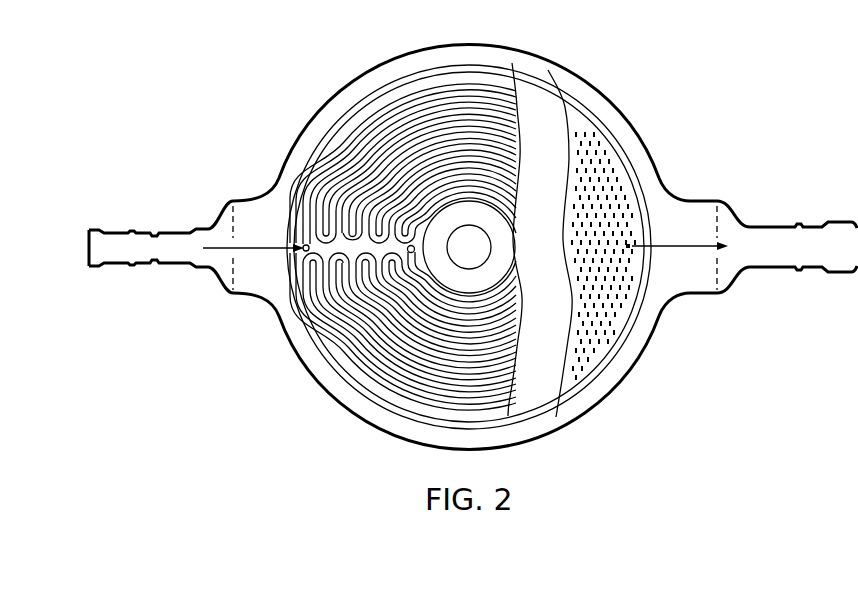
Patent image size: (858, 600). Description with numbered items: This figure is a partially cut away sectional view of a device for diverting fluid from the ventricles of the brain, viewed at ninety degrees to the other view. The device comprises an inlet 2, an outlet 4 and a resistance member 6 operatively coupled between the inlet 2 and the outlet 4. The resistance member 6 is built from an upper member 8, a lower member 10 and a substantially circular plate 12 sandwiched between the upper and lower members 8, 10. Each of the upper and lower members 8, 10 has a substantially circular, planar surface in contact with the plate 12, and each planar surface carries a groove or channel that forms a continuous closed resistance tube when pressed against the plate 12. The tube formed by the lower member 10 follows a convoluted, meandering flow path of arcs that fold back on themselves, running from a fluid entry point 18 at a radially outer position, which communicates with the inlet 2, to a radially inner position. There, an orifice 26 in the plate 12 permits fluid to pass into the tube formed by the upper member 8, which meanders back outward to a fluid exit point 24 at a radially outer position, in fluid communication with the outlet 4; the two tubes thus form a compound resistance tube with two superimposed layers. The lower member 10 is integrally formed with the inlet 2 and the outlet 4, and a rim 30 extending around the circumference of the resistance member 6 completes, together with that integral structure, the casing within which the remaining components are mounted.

The inlet 2 is at (145, 238).
The outlet 4 is at (810, 238).
The resistance member 6 is at (676, 380).
The upper member 8 is at (606, 164).
The lower member 10 is at (400, 104).
The plate 12 is at (538, 106).
The fluid entry point 18 is at (302, 252).
The fluid exit point 24 is at (634, 242).
The orifice 26 is at (408, 253).
The rim 30 is at (333, 108).